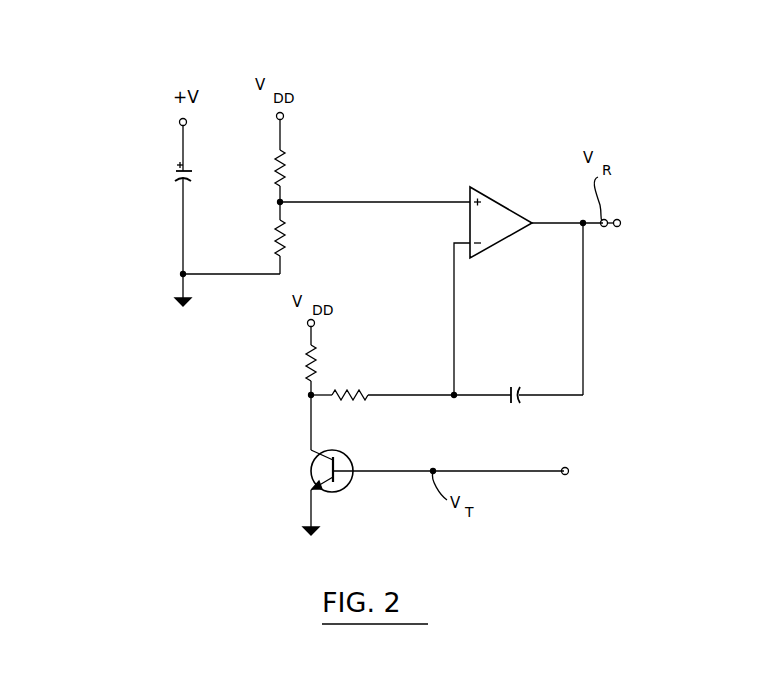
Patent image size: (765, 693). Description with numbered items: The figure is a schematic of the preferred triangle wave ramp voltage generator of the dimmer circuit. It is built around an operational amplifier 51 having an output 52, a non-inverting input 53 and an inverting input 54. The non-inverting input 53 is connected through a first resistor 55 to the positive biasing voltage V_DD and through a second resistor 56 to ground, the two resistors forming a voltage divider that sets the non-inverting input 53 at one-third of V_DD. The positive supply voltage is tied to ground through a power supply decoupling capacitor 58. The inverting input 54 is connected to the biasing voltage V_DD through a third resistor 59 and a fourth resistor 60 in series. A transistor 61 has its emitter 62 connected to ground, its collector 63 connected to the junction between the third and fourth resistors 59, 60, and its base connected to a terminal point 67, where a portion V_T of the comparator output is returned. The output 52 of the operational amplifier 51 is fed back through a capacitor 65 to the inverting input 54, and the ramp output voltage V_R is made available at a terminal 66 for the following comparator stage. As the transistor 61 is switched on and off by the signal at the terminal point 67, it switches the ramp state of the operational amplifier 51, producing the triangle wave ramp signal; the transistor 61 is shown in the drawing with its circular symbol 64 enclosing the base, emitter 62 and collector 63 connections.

The operational amplifier 51 is at (488, 190).
The output 52 is at (533, 222).
The non-inverting input 53 is at (464, 199).
The inverting input 54 is at (453, 245).
The first resistor 55 is at (286, 158).
The second resistor 56 is at (286, 232).
The power supply decoupling capacitor 58 is at (178, 181).
The third resistor 59 is at (343, 394).
The fourth resistor 60 is at (307, 357).
The transistor 61 is at (312, 470).
The emitter 62 is at (312, 488).
The collector 63 is at (318, 455).
The transistor 64 is at (352, 475).
The capacitor 65 is at (510, 392).
The terminal 66 is at (625, 226).
The terminal point 67 is at (580, 474).